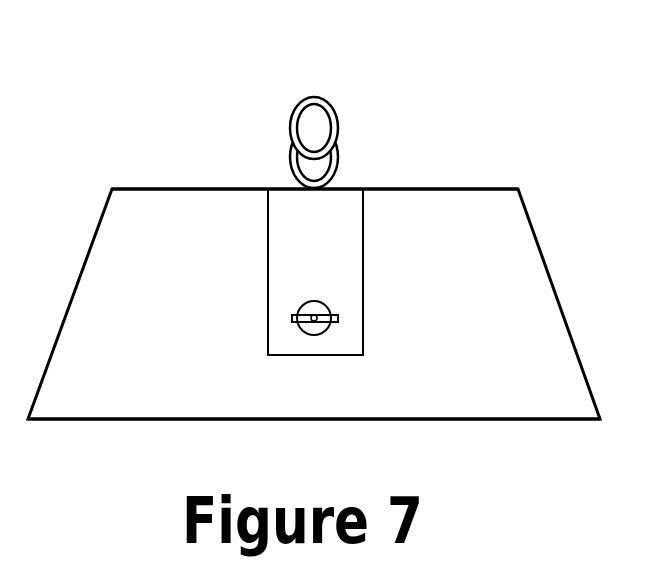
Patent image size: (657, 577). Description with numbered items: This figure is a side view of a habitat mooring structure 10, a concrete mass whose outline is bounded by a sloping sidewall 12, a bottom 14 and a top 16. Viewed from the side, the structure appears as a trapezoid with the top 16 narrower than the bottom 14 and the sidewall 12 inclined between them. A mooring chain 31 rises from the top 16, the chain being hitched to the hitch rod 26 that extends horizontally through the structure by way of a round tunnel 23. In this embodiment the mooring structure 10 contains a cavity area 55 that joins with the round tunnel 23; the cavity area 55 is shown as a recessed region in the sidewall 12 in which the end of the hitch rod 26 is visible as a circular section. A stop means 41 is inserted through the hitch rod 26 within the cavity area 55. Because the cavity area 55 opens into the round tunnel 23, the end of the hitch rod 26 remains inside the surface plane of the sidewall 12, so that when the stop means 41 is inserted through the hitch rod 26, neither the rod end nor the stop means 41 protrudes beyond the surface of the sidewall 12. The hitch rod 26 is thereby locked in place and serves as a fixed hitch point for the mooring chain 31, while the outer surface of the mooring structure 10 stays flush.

The mooring structure 10 is at (86, 172).
The sidewall 12 is at (530, 225).
The bottom 14 is at (527, 420).
The top 16 is at (165, 189).
The round tunnel 23 is at (292, 318).
The hitch rod 26 is at (305, 304).
The mooring chain 31 is at (316, 98).
The stop means 41 is at (338, 323).
The cavity area 55 is at (357, 233).